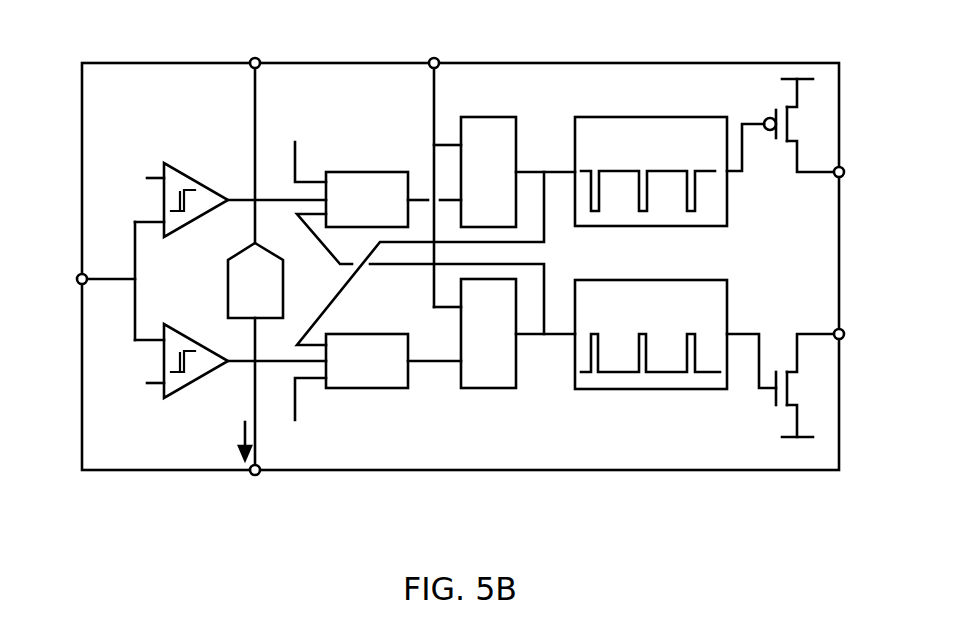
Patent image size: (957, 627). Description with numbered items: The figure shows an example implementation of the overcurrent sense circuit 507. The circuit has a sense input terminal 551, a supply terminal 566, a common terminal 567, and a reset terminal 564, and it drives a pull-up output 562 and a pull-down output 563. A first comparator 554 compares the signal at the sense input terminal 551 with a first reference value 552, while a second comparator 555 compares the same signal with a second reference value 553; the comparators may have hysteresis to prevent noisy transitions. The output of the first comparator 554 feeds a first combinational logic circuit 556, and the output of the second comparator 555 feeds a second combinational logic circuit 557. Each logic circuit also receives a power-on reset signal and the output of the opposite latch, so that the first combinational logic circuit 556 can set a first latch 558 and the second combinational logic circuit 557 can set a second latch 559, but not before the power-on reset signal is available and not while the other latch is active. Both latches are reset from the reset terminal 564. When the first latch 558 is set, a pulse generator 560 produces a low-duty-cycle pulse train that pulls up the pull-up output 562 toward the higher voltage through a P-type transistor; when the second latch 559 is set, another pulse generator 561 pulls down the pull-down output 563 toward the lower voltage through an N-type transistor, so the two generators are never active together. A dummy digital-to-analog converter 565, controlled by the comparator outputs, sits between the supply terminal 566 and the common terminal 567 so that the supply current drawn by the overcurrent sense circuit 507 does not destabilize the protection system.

The overcurrent sense circuit 507 is at (129, 99).
The sense input terminal 551 is at (80, 270).
The first reference value 552 is at (110, 166).
The second reference value 553 is at (108, 398).
The first comparator 554 is at (186, 170).
The second comparator 555 is at (180, 382).
The first combinational logic circuit 556 is at (385, 209).
The second combinational logic circuit 557 is at (385, 371).
The first latch 558 is at (492, 118).
The second latch 559 is at (488, 389).
The pulse generator 560 is at (669, 156).
The pulse generator 561 is at (669, 319).
The pull-up output 562 is at (851, 153).
The pull-down output 563 is at (846, 347).
The reset terminal 564 is at (437, 32).
The dummy DAC 565 is at (224, 278).
The supply terminal 566 is at (258, 32).
The common terminal 567 is at (258, 505).